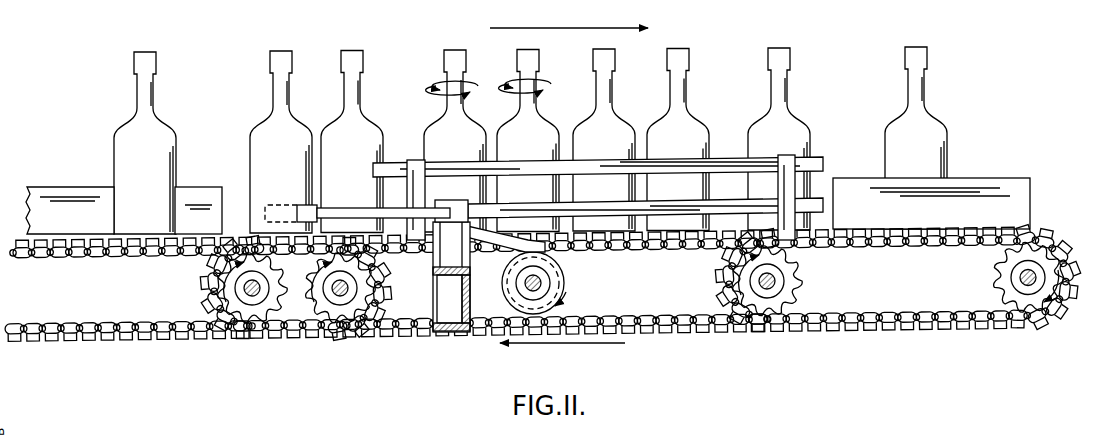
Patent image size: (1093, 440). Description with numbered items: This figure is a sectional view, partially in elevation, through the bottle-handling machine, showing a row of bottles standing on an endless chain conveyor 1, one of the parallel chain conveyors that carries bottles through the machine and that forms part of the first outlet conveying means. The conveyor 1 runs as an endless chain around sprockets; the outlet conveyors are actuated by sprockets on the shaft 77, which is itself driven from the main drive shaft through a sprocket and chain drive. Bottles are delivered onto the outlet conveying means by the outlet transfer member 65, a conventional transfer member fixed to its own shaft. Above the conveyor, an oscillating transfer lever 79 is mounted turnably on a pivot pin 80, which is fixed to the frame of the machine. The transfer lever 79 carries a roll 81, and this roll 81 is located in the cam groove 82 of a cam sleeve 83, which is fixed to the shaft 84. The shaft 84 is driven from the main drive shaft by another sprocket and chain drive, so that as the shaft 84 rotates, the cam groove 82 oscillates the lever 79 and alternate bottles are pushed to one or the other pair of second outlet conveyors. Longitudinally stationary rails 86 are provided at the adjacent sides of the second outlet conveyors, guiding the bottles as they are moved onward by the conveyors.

The endless chain conveyor 1 is at (37, 255).
The outlet transfer member 65 is at (357, 288).
The shaft 77 is at (1020, 278).
The oscillating transfer lever 79 is at (337, 209).
The pivot pin 80 is at (460, 199).
The roll 81 is at (548, 267).
The cam groove 82 is at (565, 278).
The cam sleeve 83 is at (516, 283).
The shaft 84 is at (525, 289).
The longitudinally stationary rails 86 is at (815, 200).